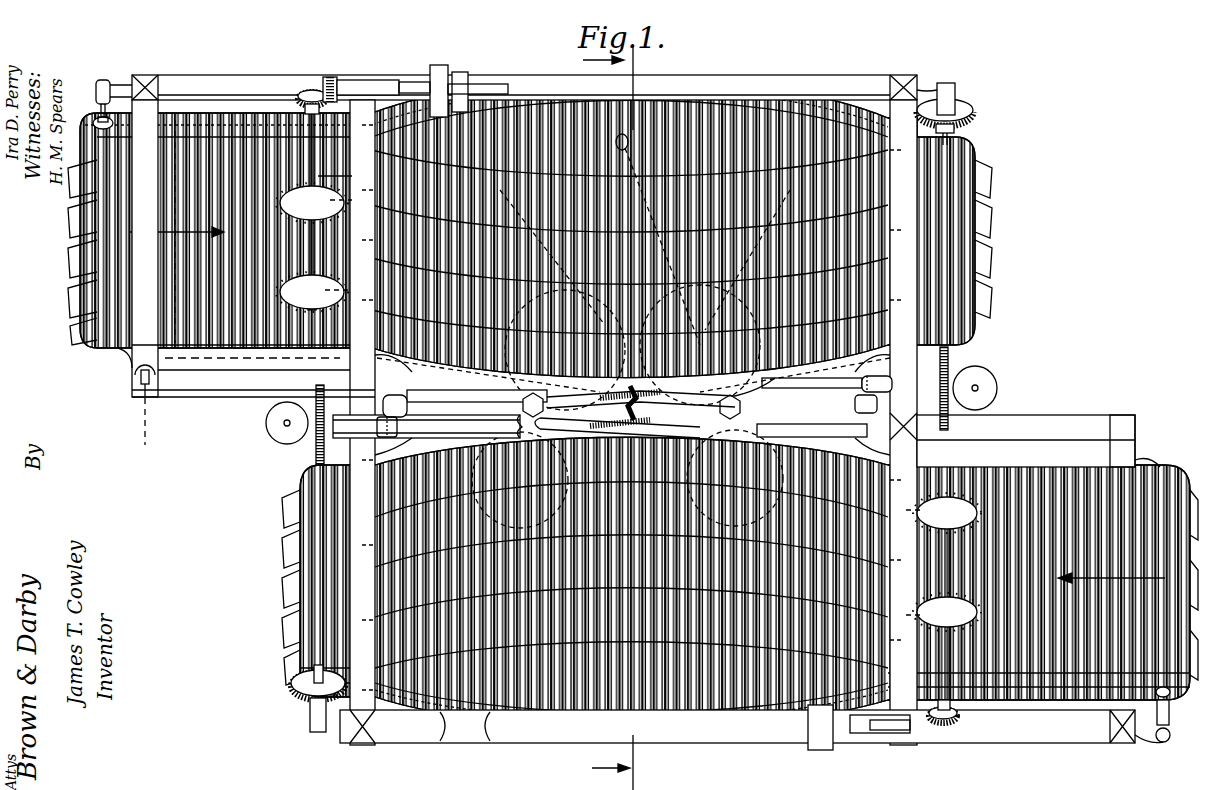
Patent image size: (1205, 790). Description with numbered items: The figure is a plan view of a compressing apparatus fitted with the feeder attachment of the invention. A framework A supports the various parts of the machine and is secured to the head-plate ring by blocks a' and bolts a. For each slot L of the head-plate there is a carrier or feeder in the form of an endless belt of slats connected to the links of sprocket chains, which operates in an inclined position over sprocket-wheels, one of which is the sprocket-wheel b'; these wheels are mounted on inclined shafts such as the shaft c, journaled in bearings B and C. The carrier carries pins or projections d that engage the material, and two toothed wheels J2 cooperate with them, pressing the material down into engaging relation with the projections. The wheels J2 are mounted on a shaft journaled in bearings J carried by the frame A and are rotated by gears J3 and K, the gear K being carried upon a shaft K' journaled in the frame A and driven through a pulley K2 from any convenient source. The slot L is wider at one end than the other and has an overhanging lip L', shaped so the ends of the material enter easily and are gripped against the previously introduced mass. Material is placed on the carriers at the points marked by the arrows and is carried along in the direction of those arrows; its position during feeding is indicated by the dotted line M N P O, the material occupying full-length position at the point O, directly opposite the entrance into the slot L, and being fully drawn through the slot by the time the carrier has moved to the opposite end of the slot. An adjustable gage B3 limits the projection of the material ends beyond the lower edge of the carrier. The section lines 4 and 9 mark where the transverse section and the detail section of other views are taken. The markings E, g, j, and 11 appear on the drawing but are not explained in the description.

The framework A is at (282, 78).
The bearing B is at (955, 90).
The adjustable gage B3 is at (170, 398).
The bearing C is at (108, 82).
The inclined shaft c is at (100, 112).
The pins or projections d is at (968, 222).
The bevel gear E is at (972, 112).
The sprocket-wheel b' is at (976, 137).
The upper slat belt g is at (150, 292).
The bearings J is at (335, 224).
The shaft collar j is at (339, 173).
The wheels J2 is at (314, 247).
The gear J3 is at (316, 88).
The gear K is at (361, 68).
The shaft K' is at (423, 76).
The pulley K2 is at (462, 72).
The slot L is at (635, 410).
The overhanging lip L' is at (752, 382).
The dotted line point M is at (178, 125).
The dotted line point N is at (154, 380).
The full-length position point O is at (617, 144).
The dotted line point P is at (631, 406).
The bolts a is at (612, 389).
The blocks a' is at (605, 394).
The section line 4 4 is at (614, 87).
The section line 9 9 is at (140, 435).
The section line 11 is at (624, 762).